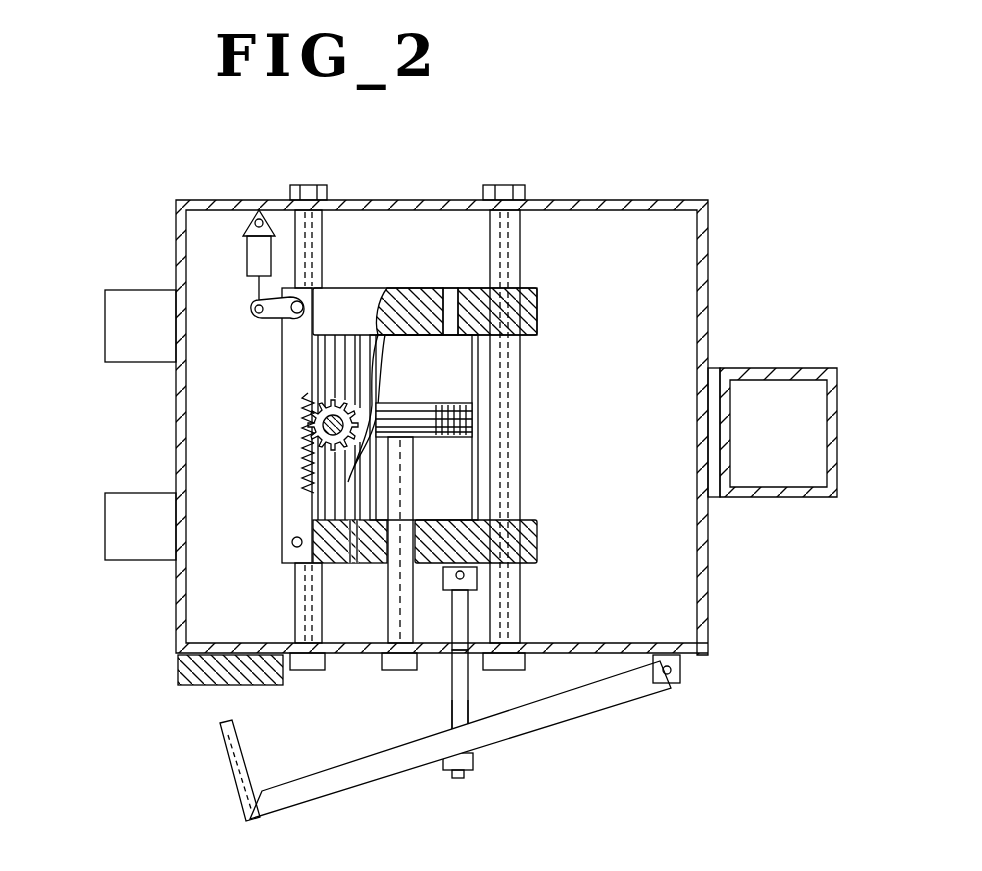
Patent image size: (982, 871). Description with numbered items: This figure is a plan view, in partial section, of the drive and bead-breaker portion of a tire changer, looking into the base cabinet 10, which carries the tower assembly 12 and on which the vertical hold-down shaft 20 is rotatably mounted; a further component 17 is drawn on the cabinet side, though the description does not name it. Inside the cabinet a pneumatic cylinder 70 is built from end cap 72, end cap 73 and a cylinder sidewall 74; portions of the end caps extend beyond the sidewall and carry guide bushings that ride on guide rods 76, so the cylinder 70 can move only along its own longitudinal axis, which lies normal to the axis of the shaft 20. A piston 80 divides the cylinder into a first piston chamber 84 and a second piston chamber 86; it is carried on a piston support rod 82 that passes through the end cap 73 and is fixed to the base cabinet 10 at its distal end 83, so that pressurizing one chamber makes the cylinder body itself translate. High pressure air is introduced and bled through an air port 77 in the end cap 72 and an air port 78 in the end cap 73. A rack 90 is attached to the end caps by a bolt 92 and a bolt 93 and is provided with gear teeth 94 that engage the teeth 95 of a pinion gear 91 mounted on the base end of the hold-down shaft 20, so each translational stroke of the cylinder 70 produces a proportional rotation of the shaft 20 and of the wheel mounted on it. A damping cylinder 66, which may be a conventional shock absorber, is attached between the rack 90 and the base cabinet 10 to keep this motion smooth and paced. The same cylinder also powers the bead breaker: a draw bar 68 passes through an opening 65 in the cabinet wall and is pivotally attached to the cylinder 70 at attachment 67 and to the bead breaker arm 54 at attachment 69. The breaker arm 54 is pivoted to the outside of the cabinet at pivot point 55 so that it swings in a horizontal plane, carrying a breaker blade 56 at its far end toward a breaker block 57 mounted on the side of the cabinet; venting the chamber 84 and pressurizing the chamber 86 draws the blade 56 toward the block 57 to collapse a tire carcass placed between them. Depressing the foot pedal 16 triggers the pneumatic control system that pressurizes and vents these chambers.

The base cabinet 10 is at (712, 275).
The tower assembly 12 is at (800, 372).
The foot pedal 16 is at (135, 530).
The upper connector block 17 is at (135, 330).
The hold-down shaft 20 is at (313, 427).
The bead breaker arm 54 is at (568, 708).
The pivot point 55 is at (682, 670).
The breaker blade 56 is at (225, 742).
The breaker block 57 is at (200, 672).
The opening 65 is at (455, 665).
The damping cylinder 66 is at (247, 250).
The pivotal attachment to cylinder 67 is at (468, 575).
The draw bar 68 is at (458, 613).
The pivotal attachment to breaker arm 69 is at (470, 702).
The pneumatic cylinder 70 is at (415, 288).
The end cap 72 is at (520, 312).
The end cap 73 is at (520, 548).
The cylinder sidewall 74 is at (478, 360).
The guide rods 76 is at (316, 252).
The air port 77 is at (451, 312).
The air port 78 is at (374, 565).
The piston 80 is at (462, 402).
The piston support rod 82 is at (392, 618).
The distal end 83 is at (408, 665).
The piston chamber 84 is at (445, 387).
The piston chamber 86 is at (465, 500).
The rack 90 is at (293, 353).
The pinion gear 91 is at (310, 417).
The bolt 92 is at (268, 322).
The bolt 93 is at (292, 543).
The gear teeth 94 is at (313, 462).
The teeth 95 is at (313, 445).